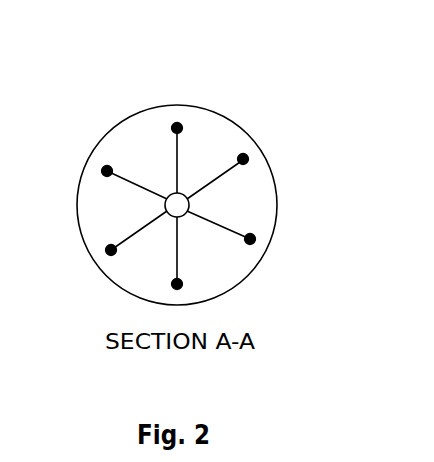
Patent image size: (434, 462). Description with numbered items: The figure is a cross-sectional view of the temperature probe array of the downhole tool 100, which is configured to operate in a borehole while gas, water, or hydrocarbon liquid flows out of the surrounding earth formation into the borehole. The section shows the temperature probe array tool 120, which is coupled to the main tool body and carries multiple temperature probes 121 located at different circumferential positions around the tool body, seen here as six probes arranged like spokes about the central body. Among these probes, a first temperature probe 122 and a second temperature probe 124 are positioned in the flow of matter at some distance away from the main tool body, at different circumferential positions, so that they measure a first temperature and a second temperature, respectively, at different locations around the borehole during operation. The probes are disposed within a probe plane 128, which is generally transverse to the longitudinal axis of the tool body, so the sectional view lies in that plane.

The downhole tool 100 is at (186, 172).
The temperature probe array tool 120 is at (275, 175).
The temperature probes 121 is at (244, 155).
The first temperature probe 122 is at (107, 166).
The second temperature probe 124 is at (254, 242).
The probe plane 128 is at (141, 135).